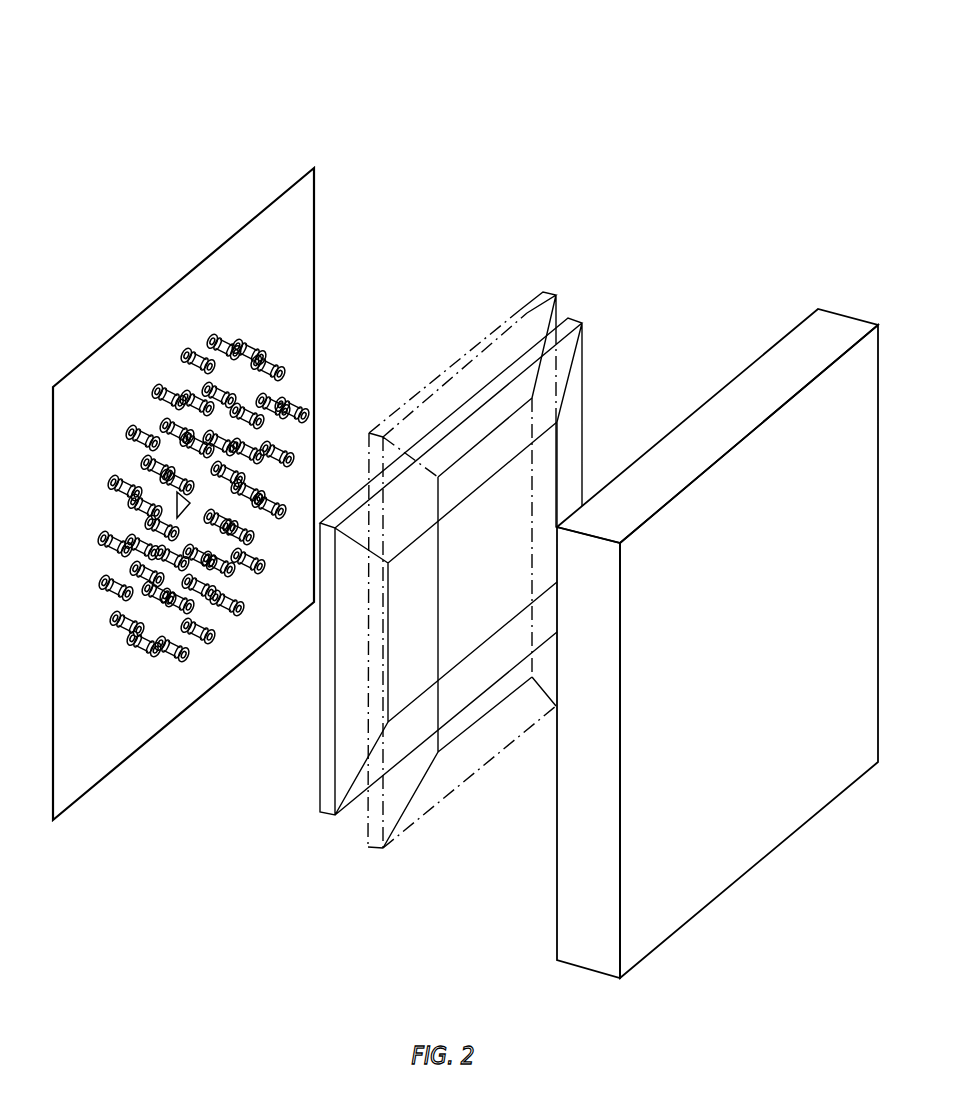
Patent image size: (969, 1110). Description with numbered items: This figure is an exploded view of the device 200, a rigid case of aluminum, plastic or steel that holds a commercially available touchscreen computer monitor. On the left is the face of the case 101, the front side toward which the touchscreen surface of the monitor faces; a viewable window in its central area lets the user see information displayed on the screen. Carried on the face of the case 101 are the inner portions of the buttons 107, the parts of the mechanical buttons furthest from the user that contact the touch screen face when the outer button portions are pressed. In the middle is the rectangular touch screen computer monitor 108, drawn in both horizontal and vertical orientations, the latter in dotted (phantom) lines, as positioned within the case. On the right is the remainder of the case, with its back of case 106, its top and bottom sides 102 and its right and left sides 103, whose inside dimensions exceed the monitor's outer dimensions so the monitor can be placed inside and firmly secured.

The optical module / detector assembly 200 is at (683, 114).
The face of the case 101 is at (282, 190).
The inner-portion of the button 107 is at (100, 588).
The rectangular touch screen computer monitor 108 is at (527, 300).
The top and bottom sides 102 is at (700, 629).
The back of case 106 is at (837, 418).
The right and left sides 103 is at (592, 915).